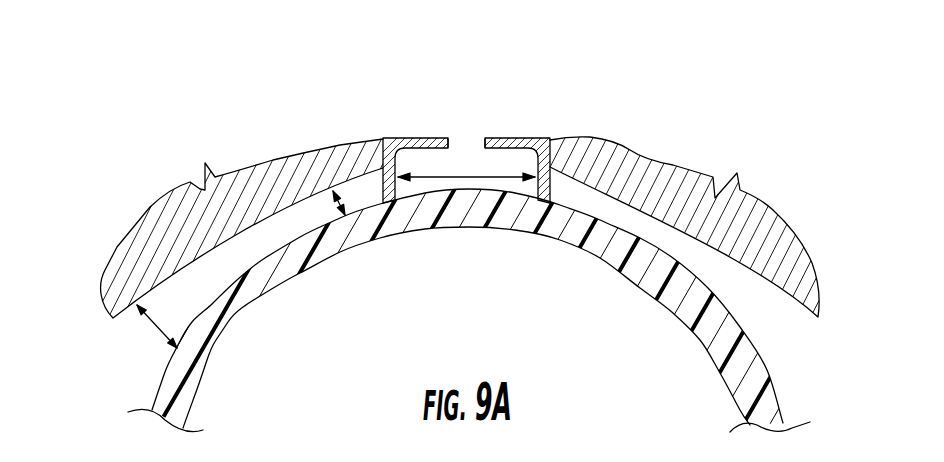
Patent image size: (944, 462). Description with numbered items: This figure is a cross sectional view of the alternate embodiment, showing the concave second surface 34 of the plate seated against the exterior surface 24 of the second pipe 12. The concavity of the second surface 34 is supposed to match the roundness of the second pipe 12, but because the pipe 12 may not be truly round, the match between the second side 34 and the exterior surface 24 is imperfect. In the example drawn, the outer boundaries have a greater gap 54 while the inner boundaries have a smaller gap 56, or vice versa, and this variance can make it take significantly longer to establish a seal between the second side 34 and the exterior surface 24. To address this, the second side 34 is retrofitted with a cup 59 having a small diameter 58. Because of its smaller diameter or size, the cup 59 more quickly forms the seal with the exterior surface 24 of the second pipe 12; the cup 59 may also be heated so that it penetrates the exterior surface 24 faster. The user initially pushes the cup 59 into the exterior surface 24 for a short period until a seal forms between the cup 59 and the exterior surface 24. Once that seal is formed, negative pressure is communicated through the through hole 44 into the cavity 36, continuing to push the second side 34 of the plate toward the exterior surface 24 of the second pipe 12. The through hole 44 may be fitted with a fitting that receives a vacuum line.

The second pipe 12 is at (653, 273).
The exterior surface 24 is at (245, 275).
The second surface 34 is at (742, 252).
The cavity 36 is at (423, 158).
The through hole 44 is at (462, 140).
The gap 54 is at (152, 325).
The gap 56 is at (338, 207).
The small diameter 58 is at (493, 175).
The cup 59 is at (550, 192).